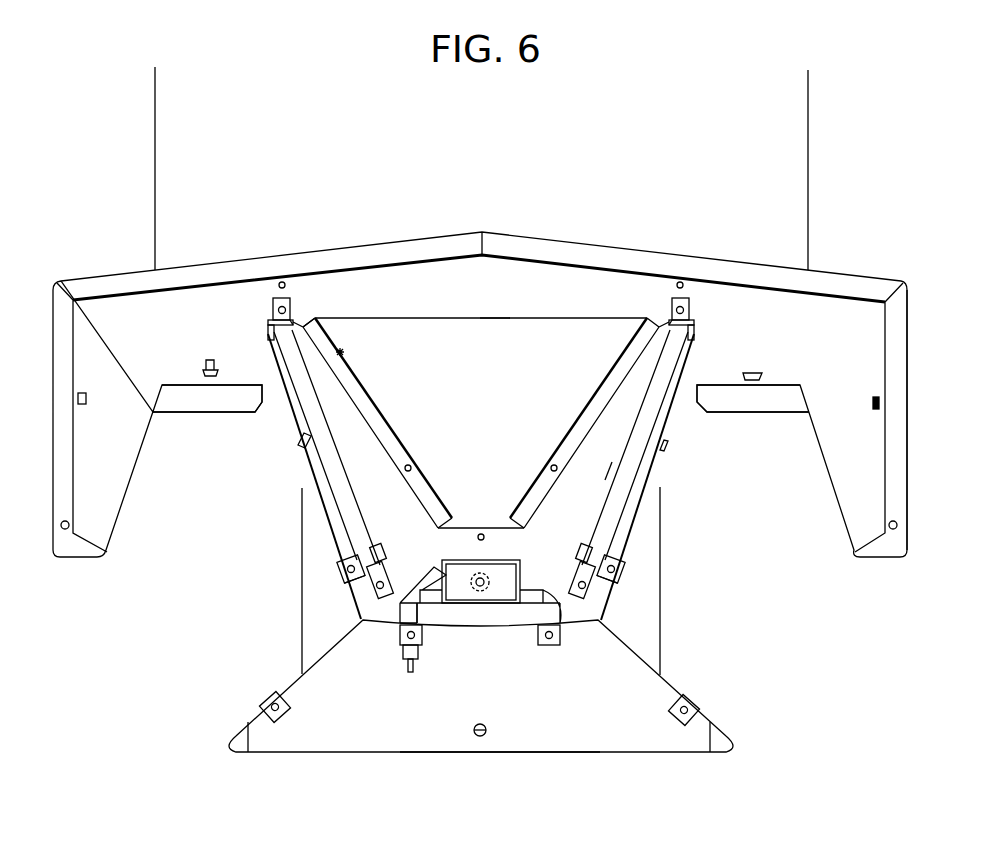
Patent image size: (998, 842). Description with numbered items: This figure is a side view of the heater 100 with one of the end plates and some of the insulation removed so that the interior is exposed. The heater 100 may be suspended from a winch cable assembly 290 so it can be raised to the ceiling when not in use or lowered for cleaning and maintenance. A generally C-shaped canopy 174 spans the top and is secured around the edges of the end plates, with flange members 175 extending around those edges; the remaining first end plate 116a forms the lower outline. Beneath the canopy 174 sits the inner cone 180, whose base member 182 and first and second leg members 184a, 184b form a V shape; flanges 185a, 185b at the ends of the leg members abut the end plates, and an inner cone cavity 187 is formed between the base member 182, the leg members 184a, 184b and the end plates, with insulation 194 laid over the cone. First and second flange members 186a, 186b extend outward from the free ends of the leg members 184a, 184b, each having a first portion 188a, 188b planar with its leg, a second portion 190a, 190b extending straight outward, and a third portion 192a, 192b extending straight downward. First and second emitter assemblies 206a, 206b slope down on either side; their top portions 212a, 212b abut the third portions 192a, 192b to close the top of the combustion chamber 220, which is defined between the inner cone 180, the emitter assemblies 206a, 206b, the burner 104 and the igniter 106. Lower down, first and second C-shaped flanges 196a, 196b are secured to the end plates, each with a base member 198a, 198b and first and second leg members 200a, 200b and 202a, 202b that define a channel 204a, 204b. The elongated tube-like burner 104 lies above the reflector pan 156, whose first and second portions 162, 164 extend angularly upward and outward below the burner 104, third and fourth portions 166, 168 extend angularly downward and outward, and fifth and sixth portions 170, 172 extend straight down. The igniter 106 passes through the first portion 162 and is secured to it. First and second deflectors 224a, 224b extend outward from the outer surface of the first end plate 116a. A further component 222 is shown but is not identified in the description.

The heater 100 is at (270, 112).
The winch cable assembly 290 is at (155, 172).
The canopy 174 is at (532, 228).
The flange members 175 is at (907, 410).
The inner cone 180 is at (342, 350).
The first leg member 184a is at (376, 402).
The second leg member 184b is at (612, 400).
The flange 185a is at (398, 448).
The flange 185b is at (645, 318).
The base member 182 is at (490, 527).
The insulation 194 is at (389, 330).
The inner cone cavity 187 is at (494, 330).
The first flange member 186a is at (296, 320).
The second flange member 186b is at (700, 320).
The combustion chamber 220 is at (663, 470).
The second portion 190a is at (272, 306).
The second portion 190b is at (681, 283).
The third portion 192a is at (268, 330).
The third portion 192b is at (695, 330).
The first portion 188a is at (293, 321).
The first portion 188b is at (671, 305).
The top portion 212a is at (270, 342).
The top portion 212b is at (695, 342).
The first deflector 224a is at (208, 392).
The second deflector 224b is at (764, 401).
The first emitter assembly 206a is at (316, 464).
The second emitter assembly 206b is at (634, 505).
The second leg member 202a is at (378, 563).
The second leg member 202b is at (580, 555).
The base member 198a is at (368, 568).
The base member 198b is at (578, 565).
The channel 204a is at (380, 553).
The channel 204b is at (582, 553).
The first leg member 200a is at (340, 556).
The first leg member 200b is at (614, 552).
The first C-shaped flange 196a is at (355, 590).
The second C-shaped flange 196b is at (610, 590).
The side panels 222 is at (652, 577).
The burner 104 is at (553, 618).
The igniter 106 is at (398, 625).
The first portion 162 is at (430, 646).
The second portion 164 is at (510, 633).
The reflector pan 156 is at (681, 675).
The third portion 166 is at (310, 667).
The fourth portion 168 is at (647, 662).
The fifth portion 170 is at (250, 747).
The sixth portion 172 is at (710, 742).
The first end plate 116a is at (612, 724).